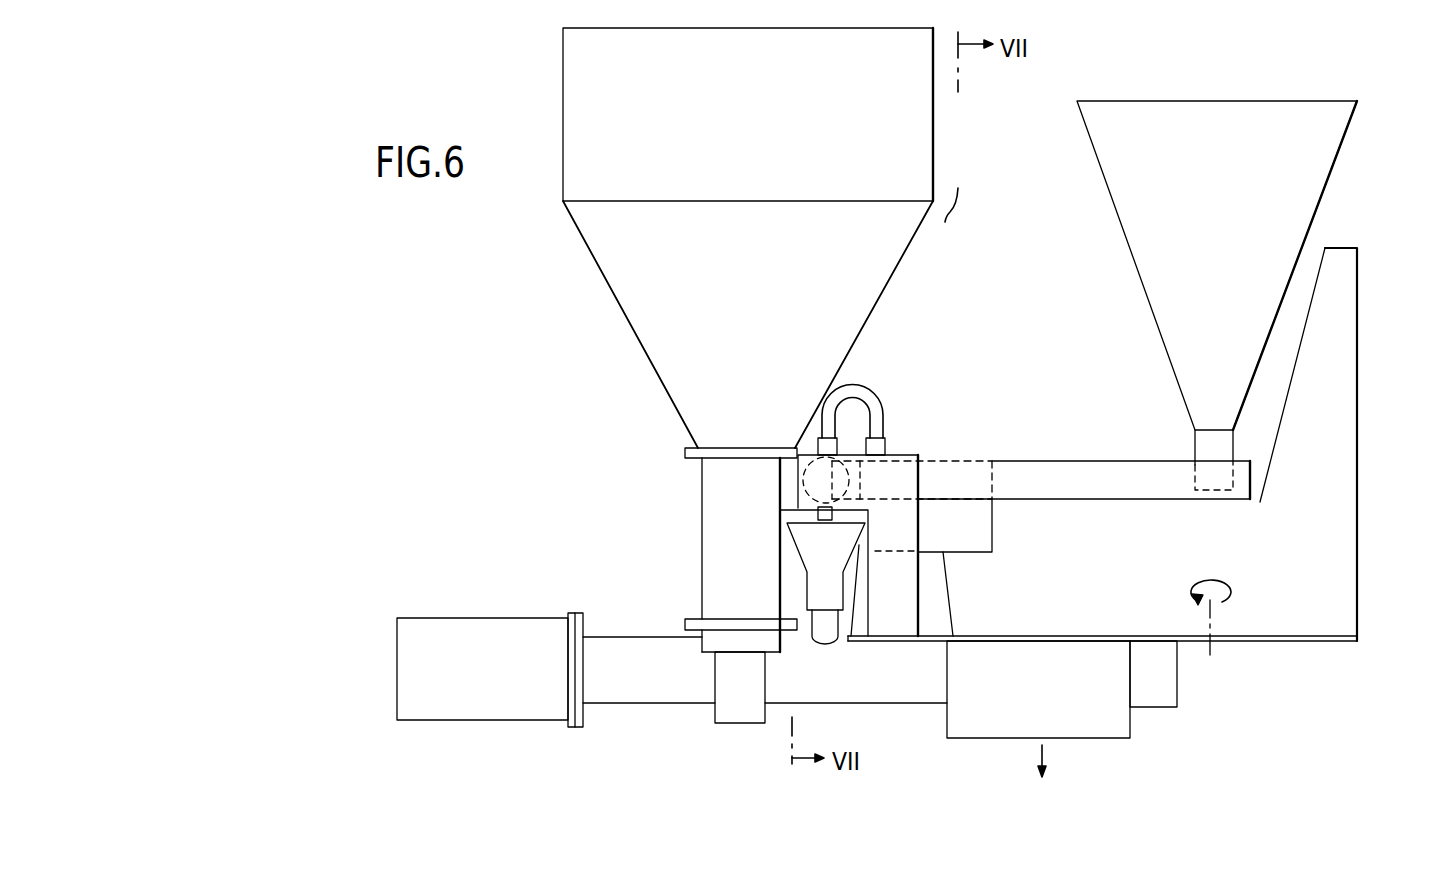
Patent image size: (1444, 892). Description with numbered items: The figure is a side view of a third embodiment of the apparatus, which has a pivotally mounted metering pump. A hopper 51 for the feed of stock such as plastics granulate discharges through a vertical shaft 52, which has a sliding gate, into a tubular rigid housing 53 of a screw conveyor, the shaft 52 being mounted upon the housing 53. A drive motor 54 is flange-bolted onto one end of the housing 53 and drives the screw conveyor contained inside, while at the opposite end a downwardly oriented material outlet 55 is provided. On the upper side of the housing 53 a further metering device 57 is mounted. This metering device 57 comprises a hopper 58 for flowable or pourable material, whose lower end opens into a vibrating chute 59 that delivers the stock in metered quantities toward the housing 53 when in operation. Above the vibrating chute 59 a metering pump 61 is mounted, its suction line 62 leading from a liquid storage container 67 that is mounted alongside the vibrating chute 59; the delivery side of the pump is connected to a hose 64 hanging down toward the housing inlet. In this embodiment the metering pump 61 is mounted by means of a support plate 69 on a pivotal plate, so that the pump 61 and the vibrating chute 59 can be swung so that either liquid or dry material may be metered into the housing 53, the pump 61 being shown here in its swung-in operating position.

The hopper 51 is at (620, 297).
The vertical shaft 52 is at (705, 552).
The tubular rigid housing 53 is at (657, 695).
The drive motor 54 is at (488, 708).
The material outlet 55 is at (1104, 723).
The metering device 57 is at (1350, 570).
The hopper 58 is at (1338, 135).
The vibrating chute 59 is at (1033, 480).
The metering pump 61 is at (838, 480).
The suction line 62 is at (858, 386).
The hose 64 is at (818, 512).
The liquid storage container 67 is at (943, 508).
The support plate 69 is at (908, 528).